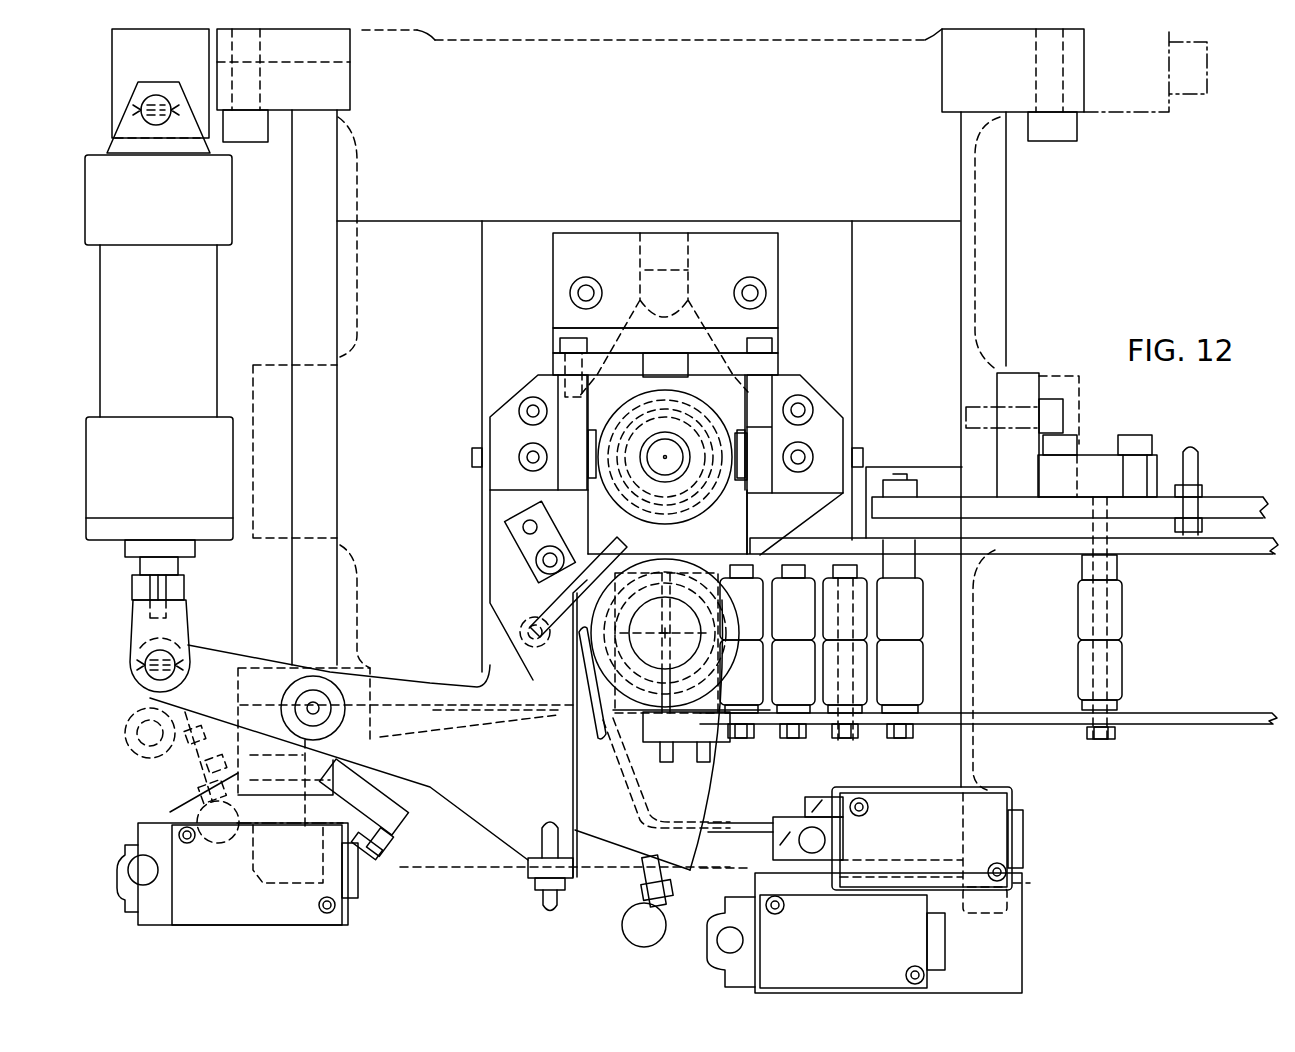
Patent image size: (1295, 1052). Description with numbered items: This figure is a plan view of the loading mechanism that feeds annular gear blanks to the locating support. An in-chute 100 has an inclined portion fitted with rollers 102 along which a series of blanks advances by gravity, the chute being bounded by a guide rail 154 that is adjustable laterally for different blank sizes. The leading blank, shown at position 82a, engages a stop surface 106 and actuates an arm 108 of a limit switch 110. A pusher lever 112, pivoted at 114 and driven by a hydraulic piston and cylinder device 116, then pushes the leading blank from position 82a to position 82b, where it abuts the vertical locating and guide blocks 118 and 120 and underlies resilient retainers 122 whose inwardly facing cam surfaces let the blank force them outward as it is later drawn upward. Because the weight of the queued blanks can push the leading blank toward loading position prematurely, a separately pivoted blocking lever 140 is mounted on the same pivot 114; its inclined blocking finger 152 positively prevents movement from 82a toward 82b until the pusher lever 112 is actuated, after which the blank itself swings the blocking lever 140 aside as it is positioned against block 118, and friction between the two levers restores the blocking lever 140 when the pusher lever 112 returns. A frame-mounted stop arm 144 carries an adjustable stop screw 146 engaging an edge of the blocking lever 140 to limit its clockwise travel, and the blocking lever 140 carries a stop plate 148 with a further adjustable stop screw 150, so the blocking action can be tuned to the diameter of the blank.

The leading blank position 82a is at (610, 713).
The loading position of blank 82b is at (602, 410).
The in-chute 100 is at (1245, 698).
The rollers 102 is at (1125, 658).
The stop surface 106 is at (598, 632).
The arm of limit switch 108 is at (605, 680).
The limit switch 110 is at (910, 790).
The pusher lever 112 is at (606, 843).
The pivot 114 is at (283, 668).
The hydraulic piston and cylinder device 116 is at (162, 333).
The vertical locating and guide block 118 is at (580, 372).
The vertical locating and guide block 120 is at (740, 385).
The resilient retainers 122 is at (598, 452).
The blocking lever 140 is at (437, 812).
The stop arm 144 is at (402, 828).
The adjustable stop screw 146 is at (368, 882).
The stop plate 148 is at (530, 872).
The adjustable stop screw 150 is at (550, 912).
The inclined blocking finger 152 is at (595, 522).
The guide rail 154 is at (1233, 553).